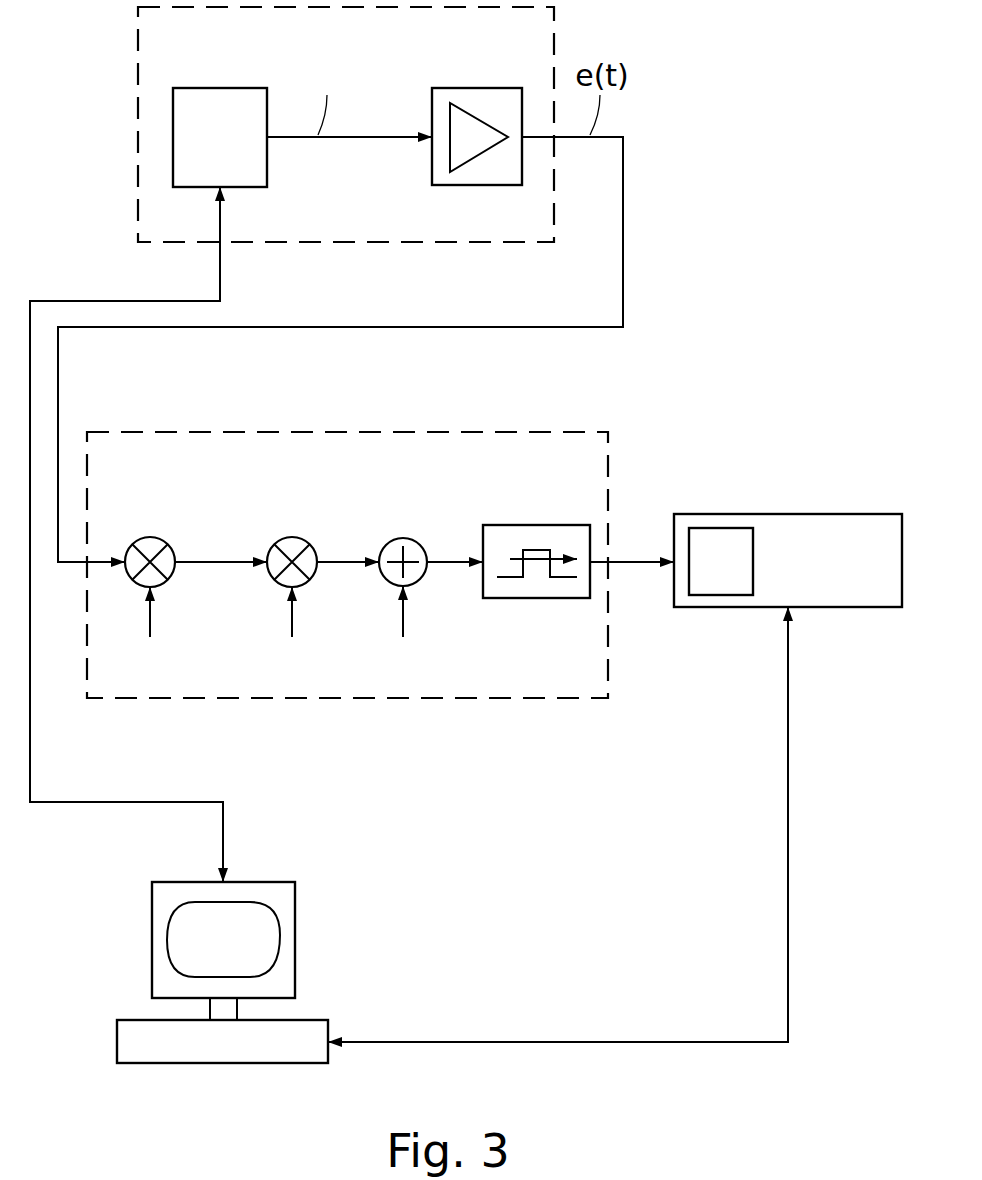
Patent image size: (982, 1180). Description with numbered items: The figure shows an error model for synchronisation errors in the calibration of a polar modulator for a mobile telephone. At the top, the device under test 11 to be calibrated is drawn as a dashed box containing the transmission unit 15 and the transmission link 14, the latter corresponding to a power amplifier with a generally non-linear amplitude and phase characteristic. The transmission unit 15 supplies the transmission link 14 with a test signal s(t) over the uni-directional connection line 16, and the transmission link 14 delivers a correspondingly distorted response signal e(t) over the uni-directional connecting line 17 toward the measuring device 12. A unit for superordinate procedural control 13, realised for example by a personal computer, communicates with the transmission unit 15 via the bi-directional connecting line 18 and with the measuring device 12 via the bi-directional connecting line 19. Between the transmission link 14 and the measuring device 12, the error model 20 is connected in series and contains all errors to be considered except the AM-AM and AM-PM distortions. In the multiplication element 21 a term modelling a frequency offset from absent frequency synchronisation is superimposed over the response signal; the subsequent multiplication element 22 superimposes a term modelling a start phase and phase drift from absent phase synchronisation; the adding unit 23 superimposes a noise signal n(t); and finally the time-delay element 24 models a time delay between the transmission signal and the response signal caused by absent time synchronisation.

The device under test 11 is at (137, 87).
The measuring device 12 is at (808, 520).
The unit for superordinate procedural control 13 is at (160, 894).
The transmission link 14 is at (475, 97).
The transmission unit 15 is at (220, 87).
The uni-directional connection line 16 is at (357, 142).
The uni-directional connecting line 17 is at (630, 560).
The bi-directional connecting line 18 is at (117, 802).
The bi-directional connecting line 19 is at (525, 1040).
The error model 20 is at (530, 432).
The multiplication element 21 is at (150, 537).
The multiplication element 22 is at (292, 537).
The adding unit 23 is at (403, 537).
The time-delay element 24 is at (538, 525).